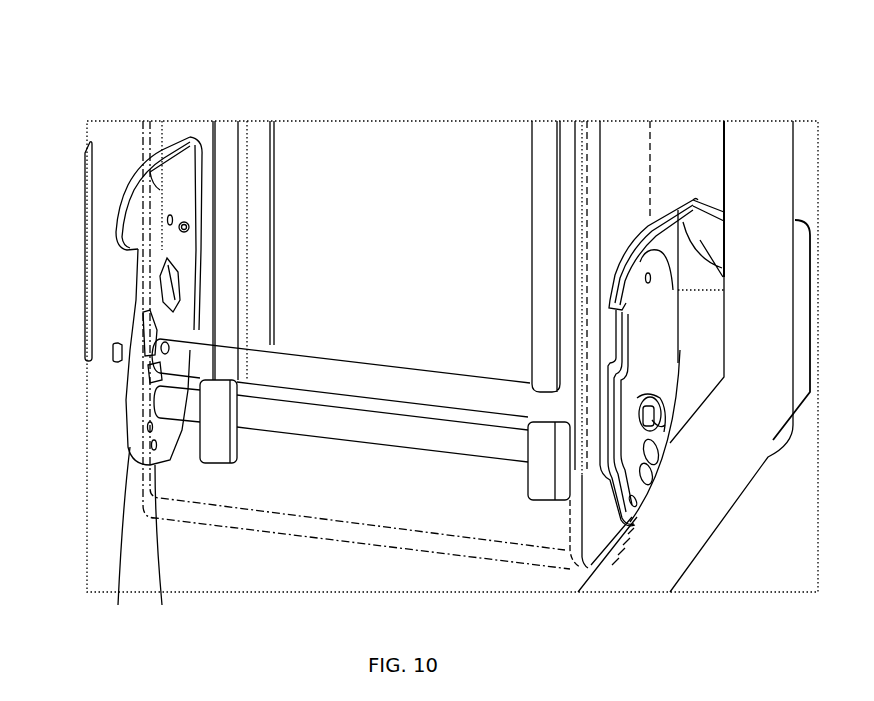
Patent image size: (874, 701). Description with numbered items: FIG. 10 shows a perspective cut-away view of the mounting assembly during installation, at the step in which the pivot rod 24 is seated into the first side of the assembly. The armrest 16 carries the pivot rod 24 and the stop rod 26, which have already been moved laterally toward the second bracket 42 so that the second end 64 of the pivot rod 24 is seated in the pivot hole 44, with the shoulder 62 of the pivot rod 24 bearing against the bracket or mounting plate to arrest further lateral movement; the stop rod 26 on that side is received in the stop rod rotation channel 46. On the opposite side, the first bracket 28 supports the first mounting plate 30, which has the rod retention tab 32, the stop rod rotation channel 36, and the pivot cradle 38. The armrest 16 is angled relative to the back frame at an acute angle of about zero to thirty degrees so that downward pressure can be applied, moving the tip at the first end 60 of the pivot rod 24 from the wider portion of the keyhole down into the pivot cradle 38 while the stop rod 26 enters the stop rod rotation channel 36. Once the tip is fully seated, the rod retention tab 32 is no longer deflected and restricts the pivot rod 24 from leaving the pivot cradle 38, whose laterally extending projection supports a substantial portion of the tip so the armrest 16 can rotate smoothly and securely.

The armrest 16 is at (463, 176).
The pivot rod 24 is at (388, 372).
The stop rod 26 is at (386, 437).
The first bracket 28 is at (193, 183).
The first mounting plate 30 is at (118, 537).
The rod retention tab 32 is at (125, 326).
The stop rod rotation channel 36 is at (162, 290).
The pivot cradle 38 is at (153, 366).
The second bracket 42 is at (165, 546).
The pivot hole 44 is at (670, 443).
The stop rod rotation channel 46 is at (660, 390).
The first end 60 is at (140, 350).
The shoulder 62 is at (168, 345).
The second end 64 is at (657, 427).